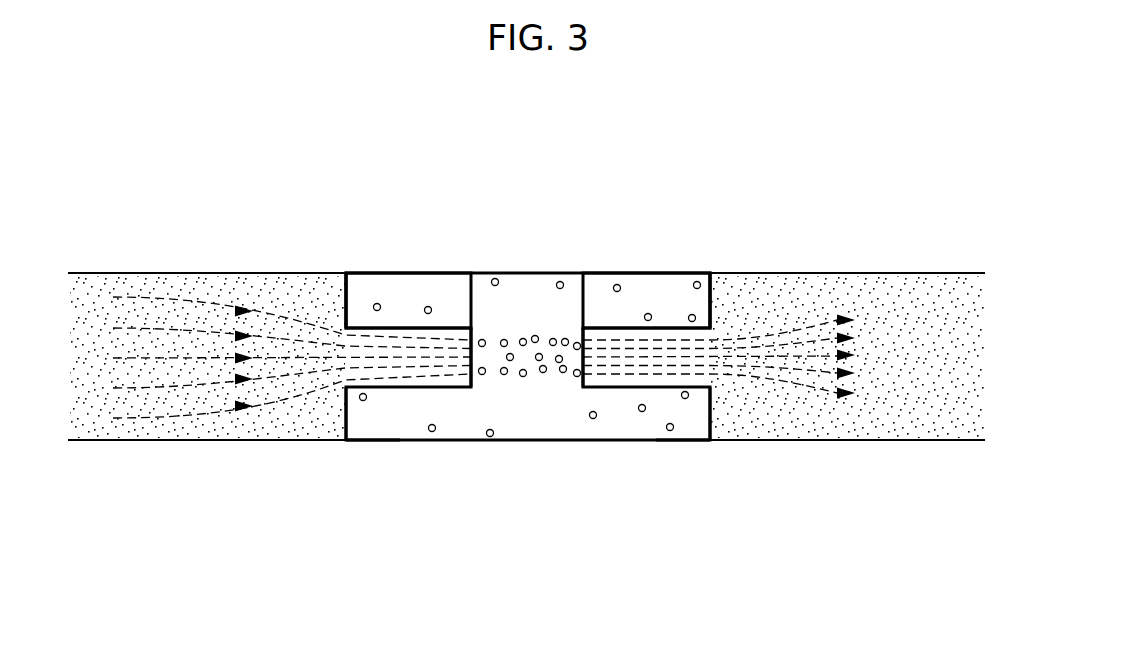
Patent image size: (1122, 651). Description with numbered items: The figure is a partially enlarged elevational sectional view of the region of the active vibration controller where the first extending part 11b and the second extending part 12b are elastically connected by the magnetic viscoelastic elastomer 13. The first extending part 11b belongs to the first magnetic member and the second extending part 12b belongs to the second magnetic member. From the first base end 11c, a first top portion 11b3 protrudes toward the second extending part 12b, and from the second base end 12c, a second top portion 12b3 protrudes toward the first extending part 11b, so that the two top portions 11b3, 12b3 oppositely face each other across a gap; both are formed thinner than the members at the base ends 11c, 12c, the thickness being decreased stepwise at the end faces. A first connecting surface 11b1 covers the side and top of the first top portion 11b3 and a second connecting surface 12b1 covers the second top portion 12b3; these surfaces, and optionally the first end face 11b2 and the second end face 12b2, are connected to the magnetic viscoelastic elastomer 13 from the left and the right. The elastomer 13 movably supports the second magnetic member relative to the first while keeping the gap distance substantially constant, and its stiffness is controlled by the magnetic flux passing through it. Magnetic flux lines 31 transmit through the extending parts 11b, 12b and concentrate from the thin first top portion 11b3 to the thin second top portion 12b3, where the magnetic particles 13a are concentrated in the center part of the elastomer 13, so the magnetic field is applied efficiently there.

The magnetic flux lines 31 is at (193, 358).
The first extending part 11b is at (218, 273).
The second extending part 12b is at (842, 273).
The magnetic viscoelastic elastomer 13 is at (533, 273).
The magnetic particles 13a is at (523, 376).
The first connecting surface 11b1 is at (435, 297).
The second connecting surface 12b1 is at (638, 298).
The first end face 11b2 is at (346, 415).
The second end face 12b2 is at (710, 415).
The first top portion 11b3 is at (472, 332).
The second top portion 12b3 is at (583, 332).
The first base end 11c is at (345, 453).
The second base end 12c is at (707, 453).